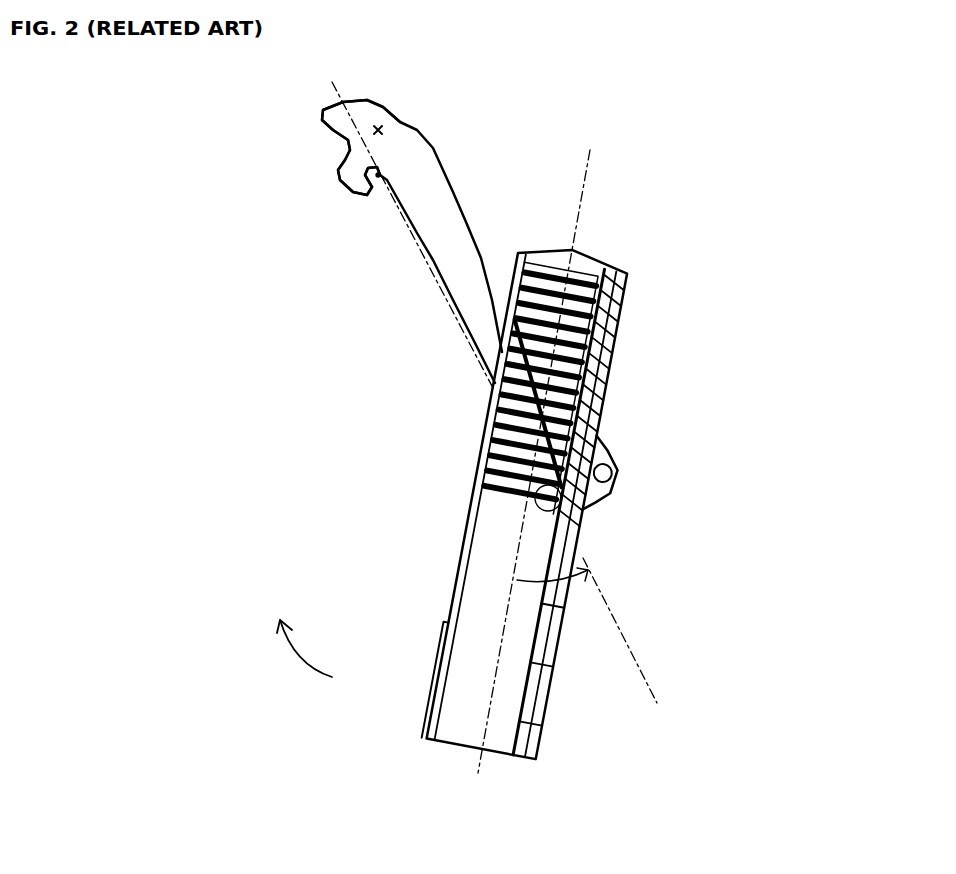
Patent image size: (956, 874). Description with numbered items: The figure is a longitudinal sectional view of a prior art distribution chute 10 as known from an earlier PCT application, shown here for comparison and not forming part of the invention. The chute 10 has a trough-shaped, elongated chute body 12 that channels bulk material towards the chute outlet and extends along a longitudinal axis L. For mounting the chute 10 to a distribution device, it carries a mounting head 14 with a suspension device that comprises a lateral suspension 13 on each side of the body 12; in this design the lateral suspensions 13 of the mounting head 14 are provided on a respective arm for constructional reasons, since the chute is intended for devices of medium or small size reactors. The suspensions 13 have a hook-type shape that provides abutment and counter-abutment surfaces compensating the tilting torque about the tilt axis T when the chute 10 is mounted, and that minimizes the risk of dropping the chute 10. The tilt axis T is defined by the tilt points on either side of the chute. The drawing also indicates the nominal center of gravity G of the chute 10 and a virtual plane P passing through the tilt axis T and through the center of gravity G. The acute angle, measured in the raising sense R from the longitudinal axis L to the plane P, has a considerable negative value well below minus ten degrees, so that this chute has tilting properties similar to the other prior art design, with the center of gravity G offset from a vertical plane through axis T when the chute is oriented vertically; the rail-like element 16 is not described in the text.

The distribution chute 10 is at (318, 337).
The chute body 12 is at (440, 587).
The lateral suspension 13 is at (390, 153).
The mounting head 14 is at (444, 145).
The guide rail 16 is at (542, 703).
The tilt axis T is at (382, 180).
The virtual plane P is at (462, 327).
The longitudinal axis L is at (580, 206).
The center of gravity G is at (535, 503).
The raising sense R is at (305, 647).